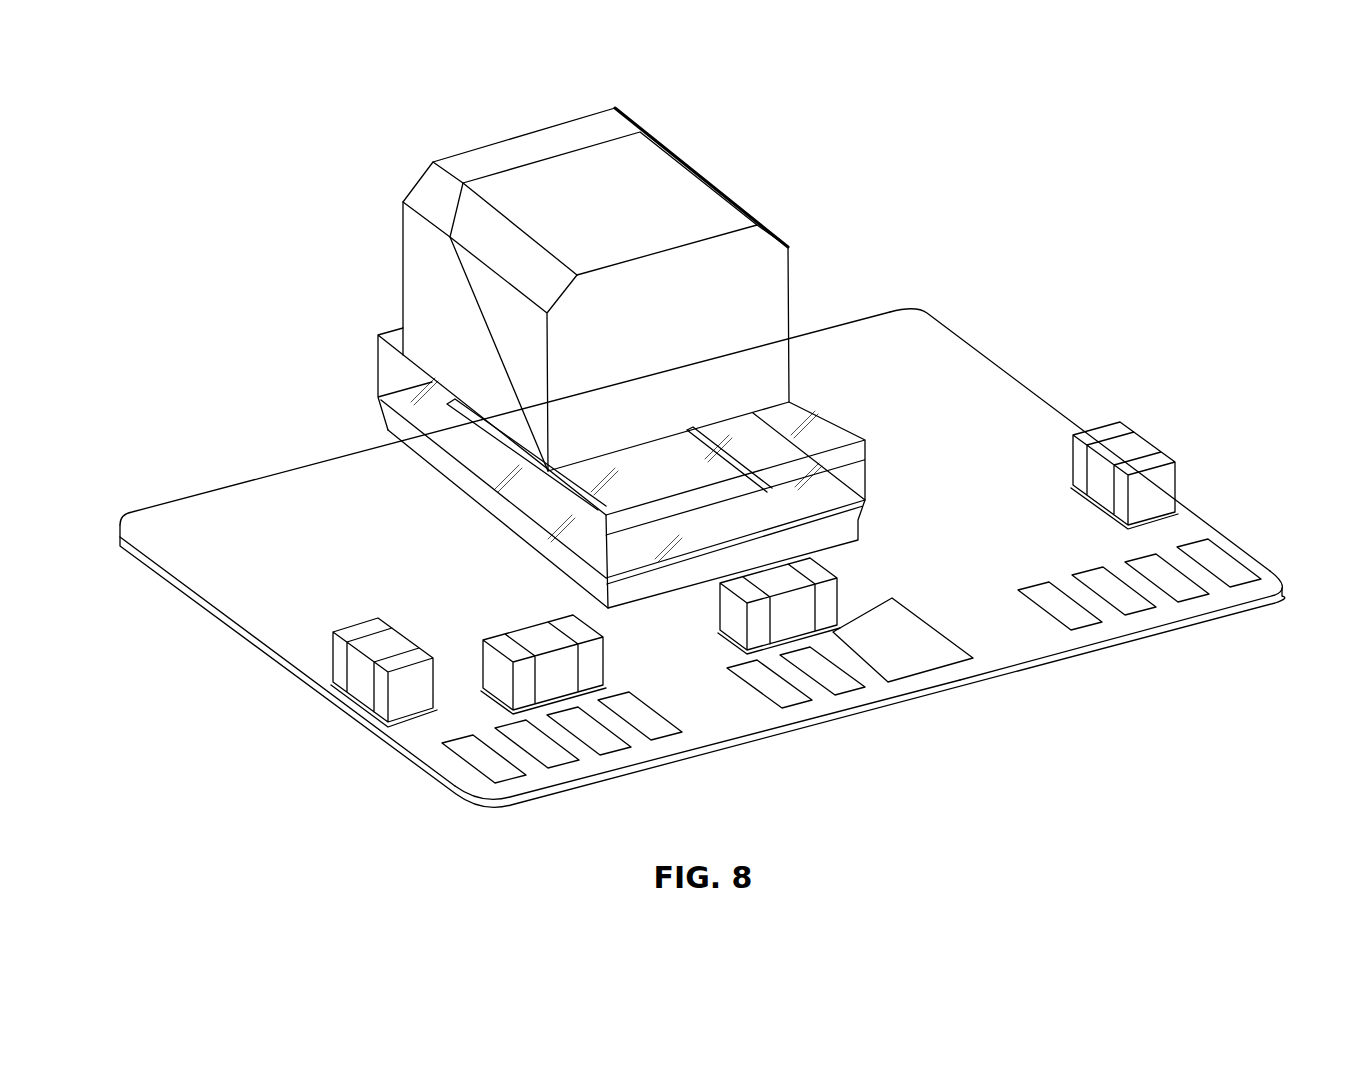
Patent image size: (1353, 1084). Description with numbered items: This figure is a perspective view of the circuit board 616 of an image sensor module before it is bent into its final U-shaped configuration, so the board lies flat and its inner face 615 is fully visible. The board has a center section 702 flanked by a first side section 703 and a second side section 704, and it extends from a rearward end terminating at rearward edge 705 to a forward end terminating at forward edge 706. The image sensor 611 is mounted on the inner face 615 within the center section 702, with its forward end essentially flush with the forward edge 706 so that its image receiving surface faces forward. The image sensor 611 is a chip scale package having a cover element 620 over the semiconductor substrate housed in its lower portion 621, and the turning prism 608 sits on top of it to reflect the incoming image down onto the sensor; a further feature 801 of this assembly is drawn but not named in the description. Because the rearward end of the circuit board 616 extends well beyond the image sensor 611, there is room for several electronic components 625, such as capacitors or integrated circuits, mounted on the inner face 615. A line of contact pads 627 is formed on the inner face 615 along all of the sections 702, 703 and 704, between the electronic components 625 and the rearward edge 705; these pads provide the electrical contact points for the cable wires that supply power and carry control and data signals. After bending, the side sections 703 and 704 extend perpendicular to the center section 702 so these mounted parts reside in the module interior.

The turning prism 608 is at (685, 190).
The image sensor 611 is at (850, 398).
The cover element 620 is at (858, 468).
The lower portion 621 is at (858, 522).
The rim 801 is at (560, 497).
The electronic components 625 is at (1138, 450).
The contact pads 627 is at (1235, 573).
The inner face 615 is at (662, 642).
The circuit board 616 is at (268, 649).
The center section 702 is at (995, 650).
The first side section 703 is at (248, 582).
The second side section 704 is at (983, 415).
The rearward edge 705 is at (930, 689).
The forward edge 706 is at (257, 477).